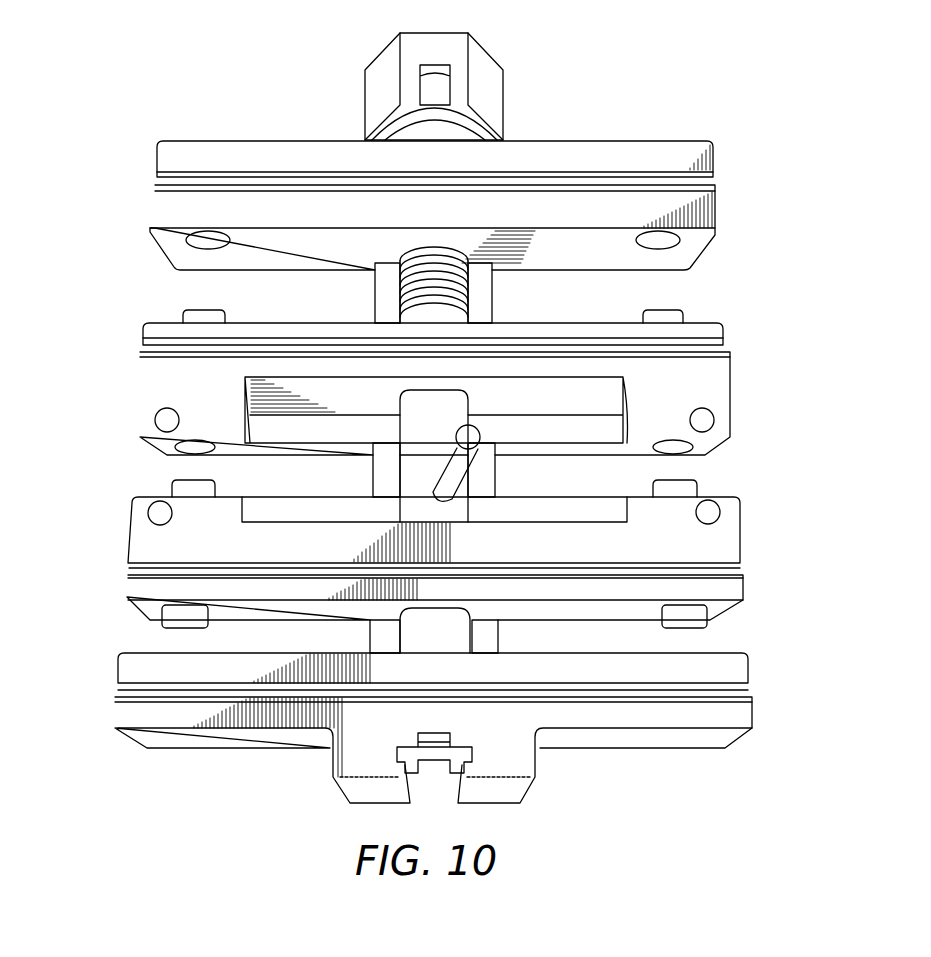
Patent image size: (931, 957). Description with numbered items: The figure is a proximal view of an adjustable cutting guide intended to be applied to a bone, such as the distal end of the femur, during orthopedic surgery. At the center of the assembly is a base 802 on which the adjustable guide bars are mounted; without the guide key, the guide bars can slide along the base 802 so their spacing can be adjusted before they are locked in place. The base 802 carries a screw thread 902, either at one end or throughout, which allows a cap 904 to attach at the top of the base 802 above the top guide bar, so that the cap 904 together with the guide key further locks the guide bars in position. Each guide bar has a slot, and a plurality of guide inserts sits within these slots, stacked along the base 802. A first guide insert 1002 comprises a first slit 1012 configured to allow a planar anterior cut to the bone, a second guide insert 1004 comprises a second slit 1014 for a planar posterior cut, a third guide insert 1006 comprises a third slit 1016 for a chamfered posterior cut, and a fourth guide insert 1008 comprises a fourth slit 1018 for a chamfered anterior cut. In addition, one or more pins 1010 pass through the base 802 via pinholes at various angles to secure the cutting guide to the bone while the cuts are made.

The base 802 is at (453, 633).
The screw thread 902 is at (420, 257).
The cap 904 is at (498, 98).
The first guide insert 1002 is at (157, 183).
The second guide insert 1004 is at (118, 693).
The third guide insert 1006 is at (130, 572).
The fourth guide insert 1008 is at (143, 352).
The pin 1010 is at (462, 465).
The first slit 1012 is at (713, 182).
The second slit 1014 is at (747, 693).
The third slit 1016 is at (745, 568).
The fourth slit 1018 is at (727, 348).